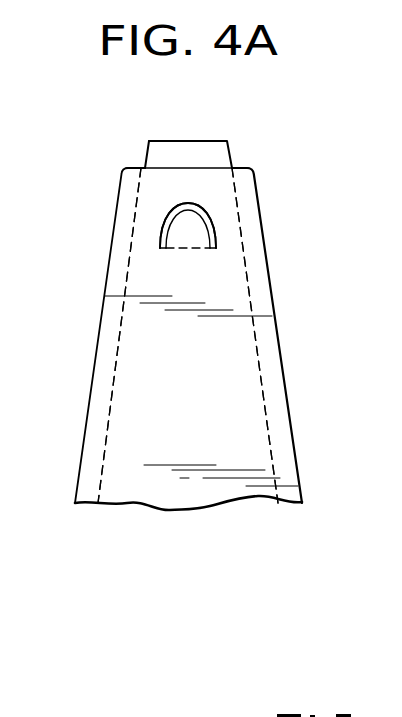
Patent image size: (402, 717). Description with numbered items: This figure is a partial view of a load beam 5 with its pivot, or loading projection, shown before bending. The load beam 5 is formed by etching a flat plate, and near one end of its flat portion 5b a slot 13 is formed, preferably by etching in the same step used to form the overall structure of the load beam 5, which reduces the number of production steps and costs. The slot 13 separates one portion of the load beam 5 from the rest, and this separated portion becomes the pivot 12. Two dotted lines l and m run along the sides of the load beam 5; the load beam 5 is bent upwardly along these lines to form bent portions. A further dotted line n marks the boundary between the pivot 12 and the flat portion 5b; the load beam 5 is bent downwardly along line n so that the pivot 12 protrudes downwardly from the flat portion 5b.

The load beam 5 is at (103, 272).
The flat portion 5b is at (170, 382).
The pivot 12 is at (188, 228).
The slot 13 is at (160, 232).
The dotted line n is at (221, 246).
The dotted line l is at (98, 506).
The dotted line m is at (278, 505).